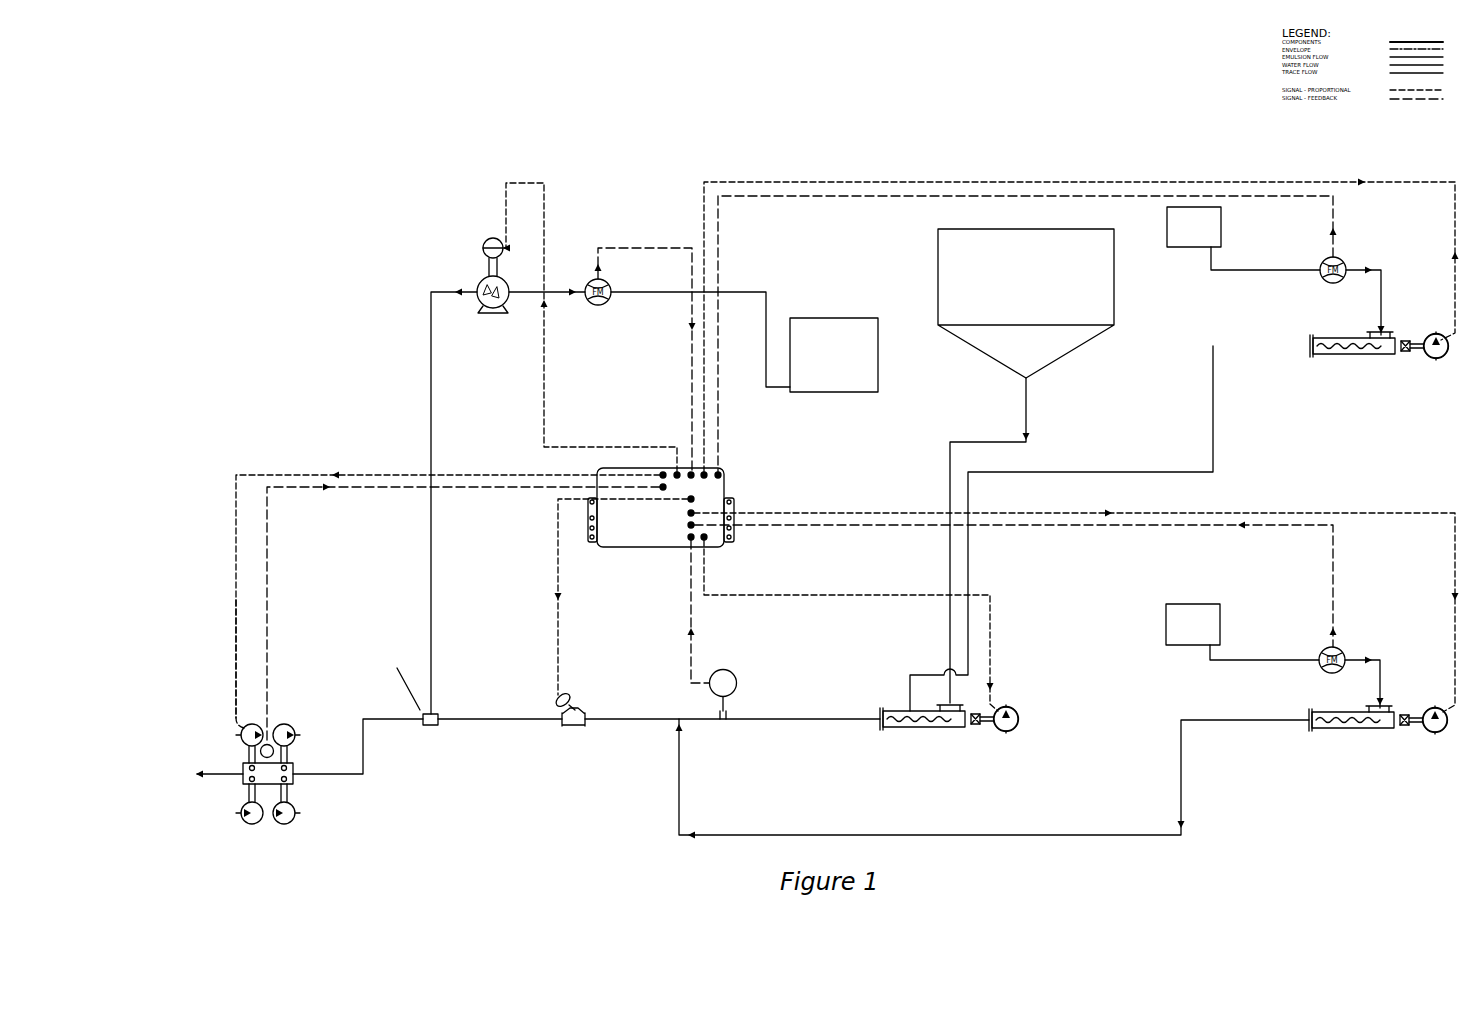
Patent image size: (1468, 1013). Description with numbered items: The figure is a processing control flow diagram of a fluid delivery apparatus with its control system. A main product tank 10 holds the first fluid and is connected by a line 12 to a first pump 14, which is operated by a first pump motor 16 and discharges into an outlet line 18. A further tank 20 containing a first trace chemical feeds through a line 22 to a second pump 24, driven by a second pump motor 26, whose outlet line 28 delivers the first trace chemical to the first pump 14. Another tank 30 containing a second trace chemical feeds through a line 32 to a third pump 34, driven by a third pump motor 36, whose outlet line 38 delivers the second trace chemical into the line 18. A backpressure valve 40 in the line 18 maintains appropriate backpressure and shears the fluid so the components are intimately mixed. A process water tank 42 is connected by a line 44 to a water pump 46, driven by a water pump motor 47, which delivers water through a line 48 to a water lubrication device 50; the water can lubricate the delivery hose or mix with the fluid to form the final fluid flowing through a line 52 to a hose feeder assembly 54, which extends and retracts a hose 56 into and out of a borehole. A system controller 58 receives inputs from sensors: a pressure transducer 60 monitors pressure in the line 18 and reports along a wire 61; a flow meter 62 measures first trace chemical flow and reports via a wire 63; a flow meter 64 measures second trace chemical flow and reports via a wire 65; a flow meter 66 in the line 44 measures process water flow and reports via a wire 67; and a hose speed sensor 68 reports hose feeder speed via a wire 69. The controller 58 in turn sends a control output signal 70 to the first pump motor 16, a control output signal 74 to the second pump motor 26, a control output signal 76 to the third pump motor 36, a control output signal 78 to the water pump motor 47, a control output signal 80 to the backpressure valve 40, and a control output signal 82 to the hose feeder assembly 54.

The main product tank 10 is at (1026, 303).
The line 12 is at (1033, 410).
The first pump 14 is at (892, 734).
The first pump motor 16 is at (1028, 710).
The outlet line 18 is at (782, 727).
The further tank 20 is at (1187, 255).
The line/pipe 22 is at (1259, 272).
The second pump 24 is at (1320, 360).
The second pump motor 26 is at (1428, 368).
The outlet line/pipe 28 is at (1121, 468).
The tank 30 is at (1230, 612).
The line/pipe 32 is at (1277, 660).
The third pump 34 is at (1325, 735).
The third pump motor 36 is at (1446, 736).
The outlet line/pipe 38 is at (1237, 727).
The backpressure valve 40 is at (582, 695).
The process water tank 42 is at (818, 312).
The line/pipe 44 is at (738, 288).
The water pump 46 is at (470, 277).
The water pump motor 47 is at (487, 238).
The line 48 is at (420, 388).
The water lubrication device 50 is at (440, 705).
The line 52 is at (368, 738).
The hose feeder assembly 54 is at (323, 815).
The hose 56 is at (206, 758).
The system controller 58 is at (730, 478).
The pressure transducer 60 is at (735, 663).
The wire 61 is at (702, 633).
The flow meter 62 is at (1346, 257).
The wire 63 is at (922, 200).
The flow meter 64 is at (1345, 649).
The wire 65 is at (1336, 575).
The flow meter 66 is at (603, 307).
The wire 67 is at (682, 242).
The hose speed sensor 68 is at (268, 744).
The wire 69 is at (277, 535).
The control output signal 70 is at (818, 592).
The control output signal 74 is at (1430, 267).
The control output signal 76 is at (1340, 505).
The control output signal 78 is at (547, 201).
The control output signal 80 is at (568, 613).
The control output signal 82 is at (482, 470).